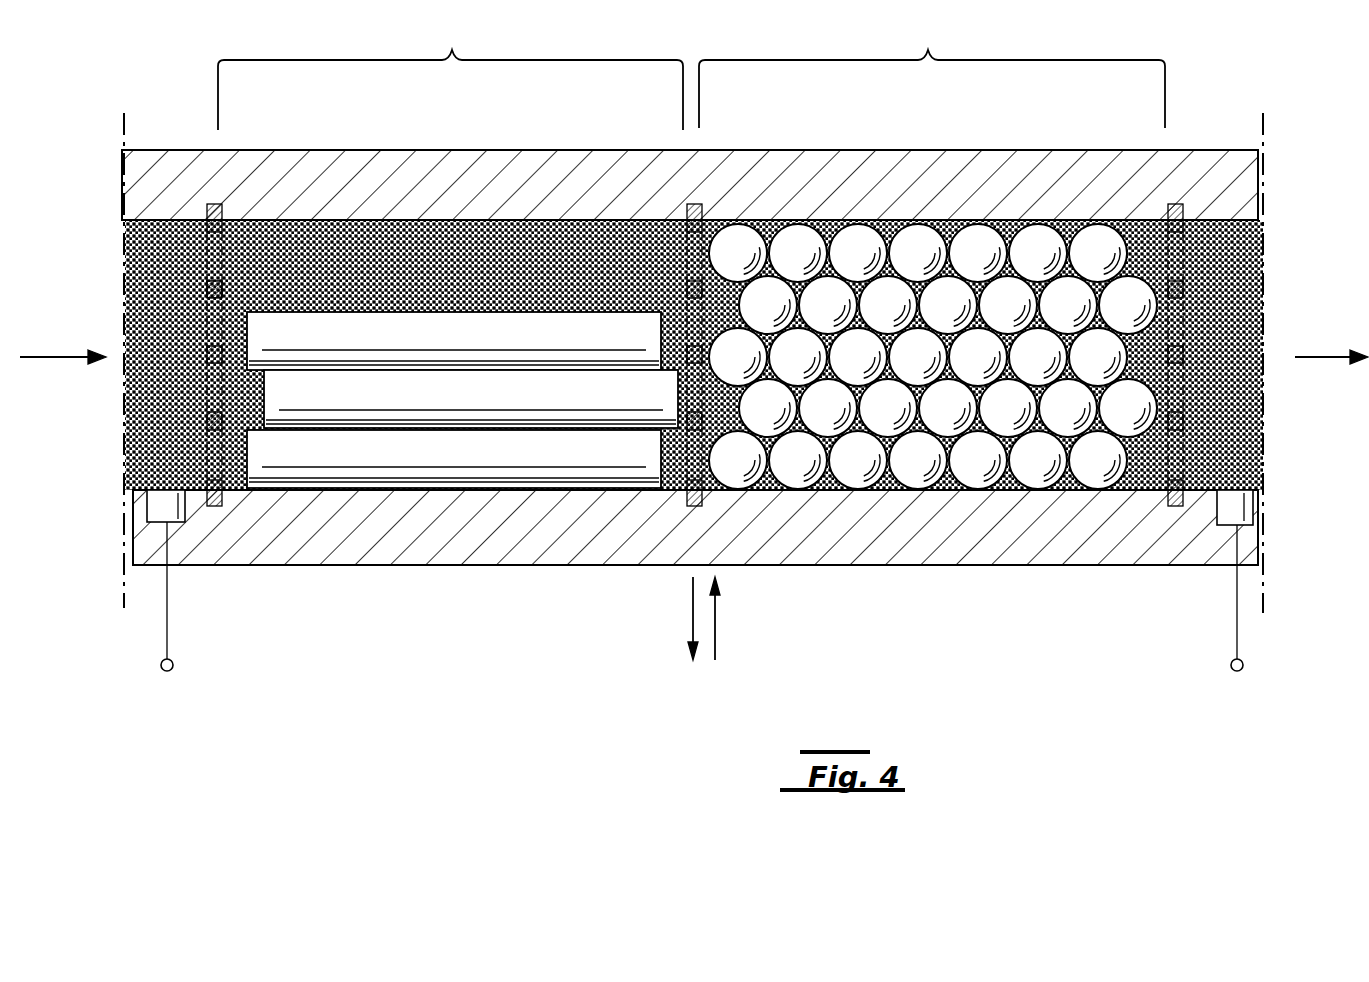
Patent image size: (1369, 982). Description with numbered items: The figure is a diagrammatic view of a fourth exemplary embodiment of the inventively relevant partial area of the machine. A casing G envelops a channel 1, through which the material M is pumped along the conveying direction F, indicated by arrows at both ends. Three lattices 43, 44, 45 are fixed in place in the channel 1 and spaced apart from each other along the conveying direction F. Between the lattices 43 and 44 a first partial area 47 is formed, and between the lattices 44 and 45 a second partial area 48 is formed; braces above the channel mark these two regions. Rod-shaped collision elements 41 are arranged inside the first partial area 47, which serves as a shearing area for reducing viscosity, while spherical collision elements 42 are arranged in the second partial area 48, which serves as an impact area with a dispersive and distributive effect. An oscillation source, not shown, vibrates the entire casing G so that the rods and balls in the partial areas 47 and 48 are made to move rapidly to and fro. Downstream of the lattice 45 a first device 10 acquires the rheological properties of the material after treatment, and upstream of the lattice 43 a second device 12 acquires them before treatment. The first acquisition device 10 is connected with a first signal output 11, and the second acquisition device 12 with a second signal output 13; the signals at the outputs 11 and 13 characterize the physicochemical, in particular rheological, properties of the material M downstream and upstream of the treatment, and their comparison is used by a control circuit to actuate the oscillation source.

The channel 1 is at (334, 272).
The casing G is at (599, 186).
The material M is at (1247, 282).
The conveying direction F is at (694, 340).
The first device for acquiring rheological properties 10 is at (1238, 507).
The first signal output 11 is at (1244, 664).
The second device for acquiring rheological properties 12 is at (160, 500).
The second signal output 13 is at (161, 664).
The rod-shaped collision elements 41 is at (477, 400).
The spherical collision elements 42 is at (975, 460).
The lattice 43 is at (207, 284).
The lattice 44 is at (690, 290).
The lattice 45 is at (1186, 275).
The first partial area 47 is at (450, 72).
The second partial area 48 is at (932, 71).